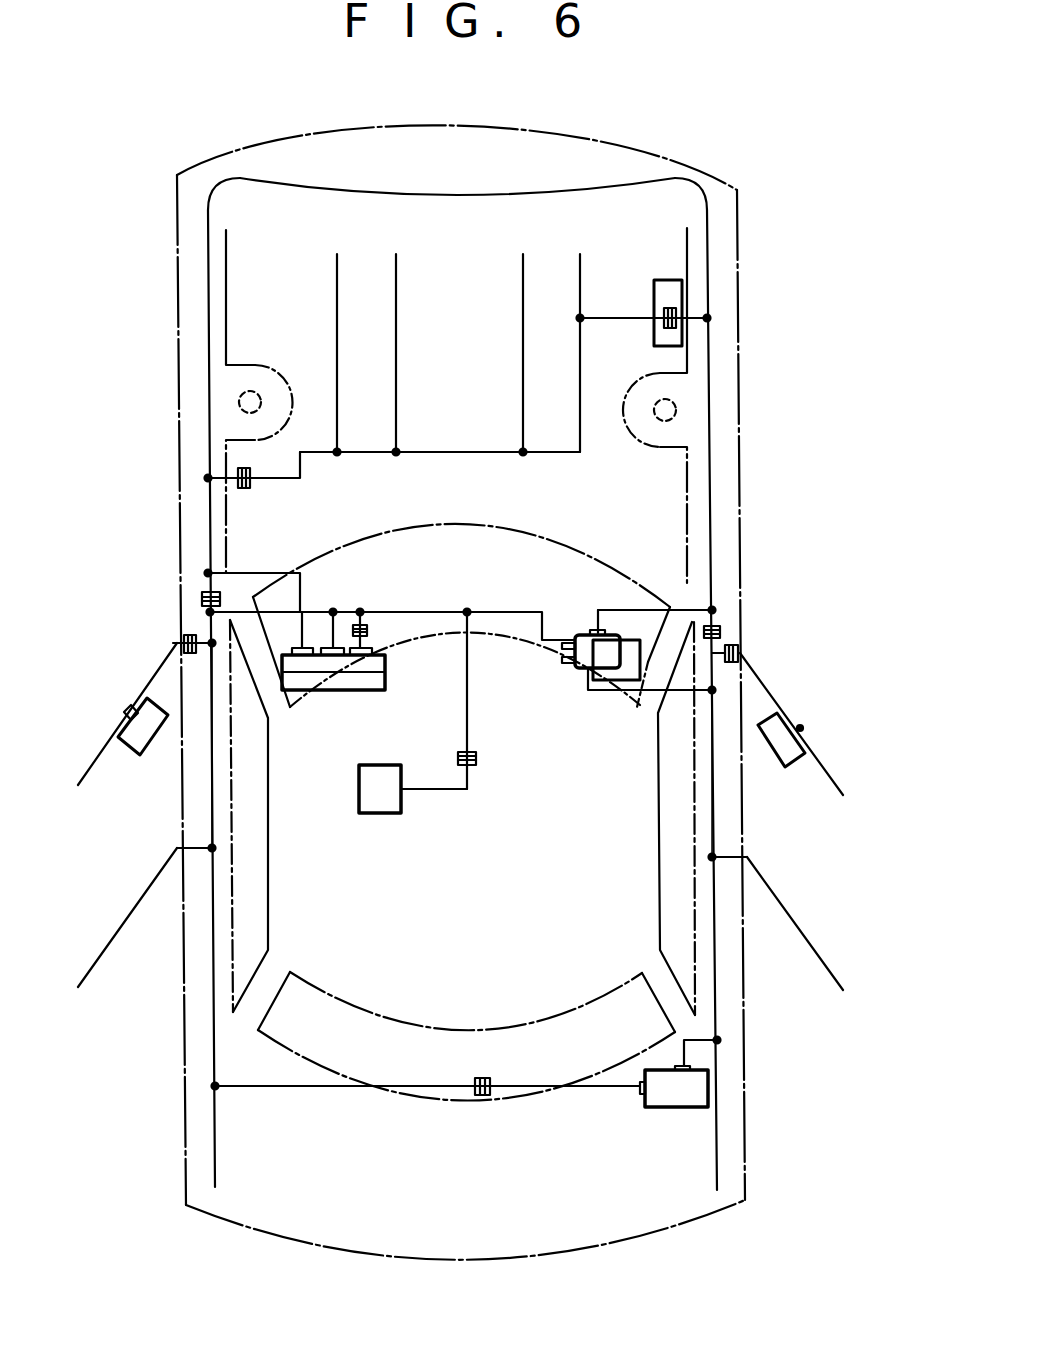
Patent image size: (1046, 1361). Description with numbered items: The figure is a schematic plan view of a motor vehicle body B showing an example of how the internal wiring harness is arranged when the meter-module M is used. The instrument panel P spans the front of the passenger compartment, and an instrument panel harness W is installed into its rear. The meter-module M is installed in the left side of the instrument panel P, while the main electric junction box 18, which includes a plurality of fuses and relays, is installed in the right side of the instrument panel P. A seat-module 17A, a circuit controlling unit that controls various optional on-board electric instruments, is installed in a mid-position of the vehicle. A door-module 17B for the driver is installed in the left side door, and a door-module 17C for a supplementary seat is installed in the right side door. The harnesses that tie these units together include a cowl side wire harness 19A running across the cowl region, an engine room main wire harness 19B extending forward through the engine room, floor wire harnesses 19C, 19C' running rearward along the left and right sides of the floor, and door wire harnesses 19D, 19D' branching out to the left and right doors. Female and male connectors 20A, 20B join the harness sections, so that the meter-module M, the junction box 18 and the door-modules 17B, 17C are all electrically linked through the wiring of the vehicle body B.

The vehicle body B is at (738, 280).
The engine room main wire harness 19B is at (578, 187).
The instrument panel P is at (660, 565).
The instrument panel harness W is at (485, 648).
The cowl side wire harness 19A is at (513, 610).
The meter-module M is at (386, 665).
The female connector 20A is at (365, 628).
The main electric junction box 18 is at (585, 670).
The male connector 20B is at (473, 768).
The seat-module 17A is at (357, 790).
The door wire harness 19D is at (150, 643).
The door-module 17B is at (123, 725).
The floor wire harness 19C is at (163, 748).
The door wire harness 19D' is at (767, 647).
The door-module 17C is at (795, 750).
The floor wire harness 19C' is at (768, 775).